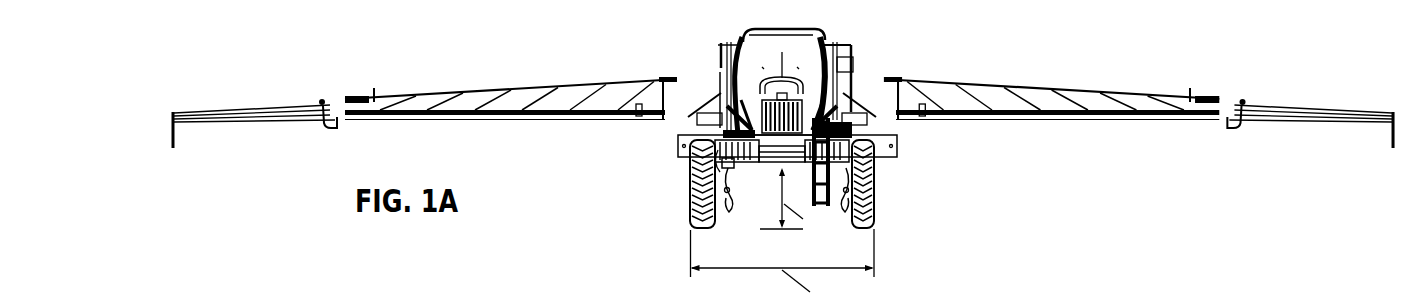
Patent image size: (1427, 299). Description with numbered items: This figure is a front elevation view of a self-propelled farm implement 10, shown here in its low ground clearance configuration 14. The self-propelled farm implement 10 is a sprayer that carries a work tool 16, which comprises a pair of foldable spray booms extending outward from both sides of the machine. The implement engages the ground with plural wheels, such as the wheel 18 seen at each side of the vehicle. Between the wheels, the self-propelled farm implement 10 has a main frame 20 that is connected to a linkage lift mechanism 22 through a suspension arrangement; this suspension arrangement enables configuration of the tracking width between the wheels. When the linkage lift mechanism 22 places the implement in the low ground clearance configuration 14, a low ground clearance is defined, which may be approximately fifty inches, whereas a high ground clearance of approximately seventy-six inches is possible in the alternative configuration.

The self-propelled farm implement 10 is at (413, 58).
The low ground clearance configuration 14 is at (890, 220).
The work tool 16 is at (1033, 122).
The wheel 18 is at (691, 207).
The main frame 20 is at (731, 173).
The linkage lift mechanism 22 is at (731, 219).